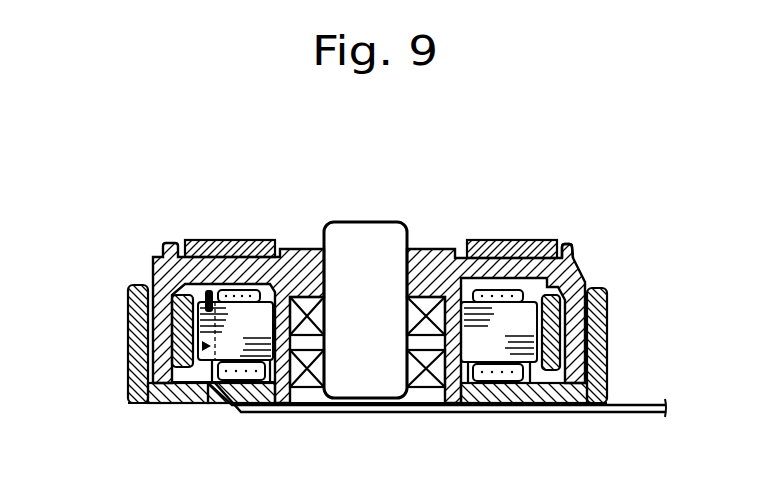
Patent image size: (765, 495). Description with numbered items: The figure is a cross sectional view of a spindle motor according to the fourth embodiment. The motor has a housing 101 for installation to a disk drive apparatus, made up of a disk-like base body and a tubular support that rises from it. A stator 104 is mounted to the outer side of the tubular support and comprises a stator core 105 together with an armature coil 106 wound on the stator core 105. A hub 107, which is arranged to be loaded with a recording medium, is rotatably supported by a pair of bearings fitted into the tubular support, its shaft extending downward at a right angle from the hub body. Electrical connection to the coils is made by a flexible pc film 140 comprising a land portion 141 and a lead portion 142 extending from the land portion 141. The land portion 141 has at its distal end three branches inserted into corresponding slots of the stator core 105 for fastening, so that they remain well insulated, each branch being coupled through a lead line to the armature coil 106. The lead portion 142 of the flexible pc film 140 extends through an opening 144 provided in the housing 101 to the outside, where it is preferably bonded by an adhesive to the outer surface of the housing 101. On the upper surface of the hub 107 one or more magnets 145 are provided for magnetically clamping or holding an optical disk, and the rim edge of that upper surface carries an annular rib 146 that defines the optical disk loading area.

The housing 101 is at (168, 405).
The stator 104 is at (540, 338).
The stator core 105 is at (523, 320).
The armature coil 106 is at (248, 292).
The hub 107 is at (153, 257).
The flexible pc film 140 is at (278, 406).
The land portion 141 is at (200, 345).
The lead portion 142 is at (492, 409).
The opening 144 is at (213, 394).
The magnet 145 is at (217, 239).
The annular rib 146 is at (574, 243).